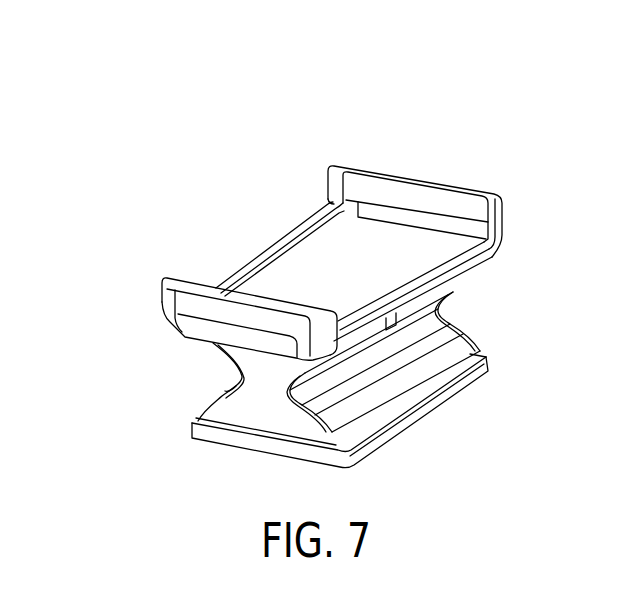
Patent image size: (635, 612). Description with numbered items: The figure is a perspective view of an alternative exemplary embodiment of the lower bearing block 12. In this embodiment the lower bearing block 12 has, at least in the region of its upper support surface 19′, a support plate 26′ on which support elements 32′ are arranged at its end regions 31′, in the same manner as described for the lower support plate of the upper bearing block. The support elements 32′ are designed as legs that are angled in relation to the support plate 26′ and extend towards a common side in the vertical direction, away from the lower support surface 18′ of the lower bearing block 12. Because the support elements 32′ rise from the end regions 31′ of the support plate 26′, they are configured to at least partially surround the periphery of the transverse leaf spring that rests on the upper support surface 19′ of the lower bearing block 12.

The lower bearing block 12 is at (352, 283).
The upper support surface 19′ is at (310, 200).
The support plate 26′ is at (362, 241).
The support elements 32′ is at (190, 303).
The end regions 31′ is at (352, 253).
The lower support surface 18′ is at (427, 418).